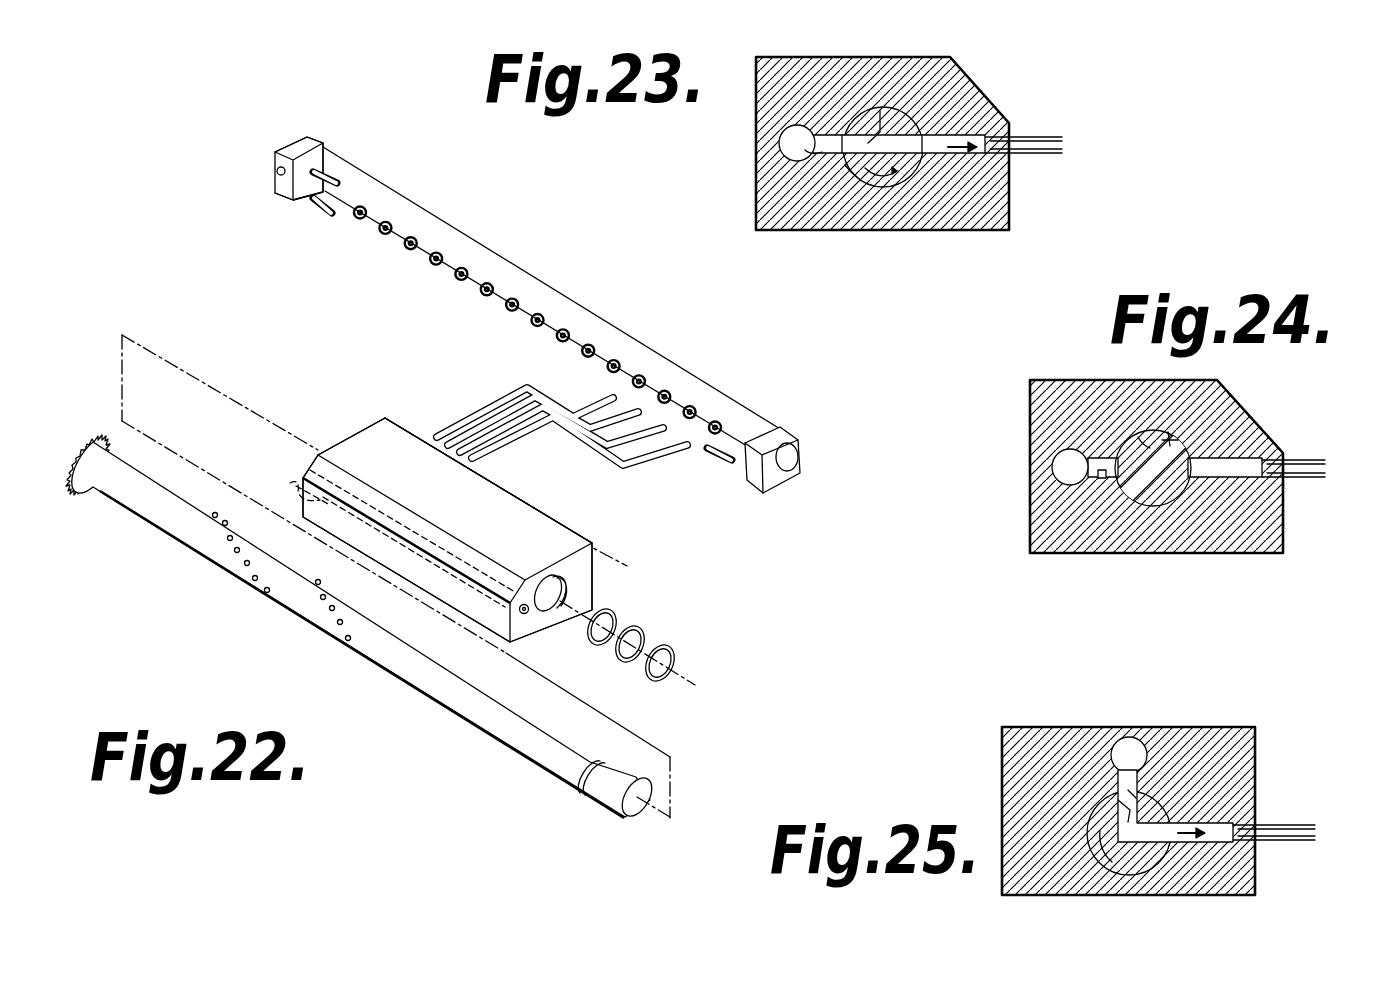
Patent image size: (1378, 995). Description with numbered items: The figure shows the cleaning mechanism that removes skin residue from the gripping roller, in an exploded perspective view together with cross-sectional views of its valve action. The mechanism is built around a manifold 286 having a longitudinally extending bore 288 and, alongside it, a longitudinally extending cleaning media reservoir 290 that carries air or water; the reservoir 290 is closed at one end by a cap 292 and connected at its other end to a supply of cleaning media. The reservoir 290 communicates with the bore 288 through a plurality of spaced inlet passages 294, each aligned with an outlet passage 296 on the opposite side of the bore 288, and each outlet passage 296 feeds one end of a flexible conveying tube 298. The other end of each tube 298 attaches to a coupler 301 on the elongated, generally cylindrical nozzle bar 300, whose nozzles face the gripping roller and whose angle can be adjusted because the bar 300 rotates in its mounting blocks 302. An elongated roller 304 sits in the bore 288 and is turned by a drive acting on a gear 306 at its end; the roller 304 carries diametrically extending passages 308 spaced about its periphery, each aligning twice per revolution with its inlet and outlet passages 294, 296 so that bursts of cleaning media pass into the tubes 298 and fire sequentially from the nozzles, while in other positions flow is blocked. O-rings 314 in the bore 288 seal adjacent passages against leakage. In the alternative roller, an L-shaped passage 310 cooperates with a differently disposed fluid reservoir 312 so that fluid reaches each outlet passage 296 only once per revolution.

In FIG. 22, the manifold 286 is at (584, 580).
In FIG. 23, the manifold 286 is at (997, 226).
In FIG. 24, the manifold 286 is at (1030, 552).
In FIG. 25, the manifold 286 is at (1256, 727).
In FIG. 22, the bore 288 is at (553, 580).
In FIG. 23, the bore 288 is at (858, 170).
In FIG. 24, the bore 288 is at (1139, 436).
In FIG. 22, the cleaning media reservoir 290 is at (296, 482).
In FIG. 23, the cleaning media reservoir 290 is at (794, 126).
In FIG. 24, the cleaning media reservoir 290 is at (1067, 450).
In FIG. 22, the cap 292 is at (528, 614).
In FIG. 23, the inlet passages 294 is at (823, 157).
In FIG. 24, the inlet passages 294 is at (1101, 480).
In FIG. 25, the inlet passages 294 is at (1140, 786).
In FIG. 23, the outlet passages 296 is at (932, 131).
In FIG. 24, the outlet passages 296 is at (1236, 460).
In FIG. 25, the outlet passages 296 is at (1215, 843).
In FIG. 22, the flexible conveying tube 298 is at (634, 470).
In FIG. 23, the flexible conveying tube 298 is at (1036, 136).
In FIG. 24, the flexible conveying tube 298 is at (1299, 479).
In FIG. 25, the flexible conveying tube 298 is at (1300, 822).
In FIG. 22, the nozzle bar 300 is at (627, 340).
In FIG. 22, the couplers 301 is at (436, 259).
In FIG. 22, the mounting blocks 302 is at (302, 137).
In FIG. 22, the roller 304 is at (566, 766).
In FIG. 23, the roller 304 is at (893, 178).
In FIG. 24, the roller 304 is at (1156, 504).
In FIG. 25, the roller 304 is at (1106, 858).
In FIG. 22, the gear 306 is at (93, 496).
In FIG. 22, the passages 308 is at (318, 582).
In FIG. 23, the passages 308 is at (881, 108).
In FIG. 24, the passages 308 is at (1168, 431).
In FIG. 25, the L-shaped passage 310 is at (1145, 806).
In FIG. 25, the fluid reservoir 312 is at (1113, 752).
In FIG. 22, the O-rings 314 is at (657, 648).